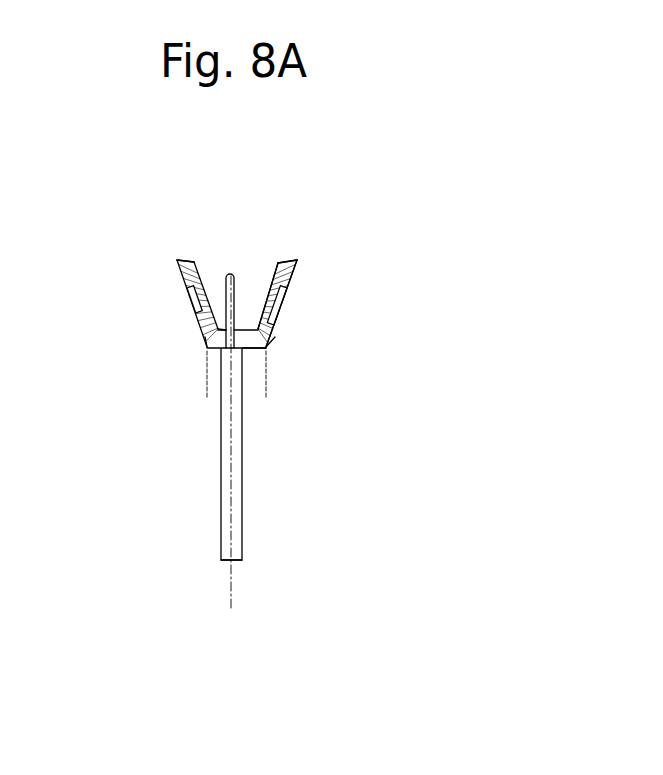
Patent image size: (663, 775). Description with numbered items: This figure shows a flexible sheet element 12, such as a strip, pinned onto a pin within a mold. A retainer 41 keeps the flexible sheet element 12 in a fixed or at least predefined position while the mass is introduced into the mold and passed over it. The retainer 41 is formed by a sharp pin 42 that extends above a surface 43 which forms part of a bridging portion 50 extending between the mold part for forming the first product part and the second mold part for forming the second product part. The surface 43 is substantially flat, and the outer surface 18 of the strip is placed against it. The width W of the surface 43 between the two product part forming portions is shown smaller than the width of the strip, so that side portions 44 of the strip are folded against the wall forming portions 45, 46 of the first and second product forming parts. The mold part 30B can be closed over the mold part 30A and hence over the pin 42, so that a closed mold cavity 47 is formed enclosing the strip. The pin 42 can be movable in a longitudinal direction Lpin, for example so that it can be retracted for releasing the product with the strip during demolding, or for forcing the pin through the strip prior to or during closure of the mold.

The flexible sheet element 12 is at (206, 348).
The outer surface of the strip 18 is at (205, 337).
The retainer 41 is at (229, 230).
The sharp pin 42 is at (238, 308).
The surface 43 is at (223, 313).
The side portions of the strip 44 is at (193, 297).
The wall forming portion 45 is at (293, 268).
The wall forming portion 46 is at (178, 240).
The mold cavity 47 is at (294, 246).
The bridging portion 50 is at (253, 365).
The mold part 30A is at (287, 349).
The mold part 30B is at (266, 264).
The width of the surface W is at (163, 388).
The longitudinal direction of the pin Lpin is at (232, 598).